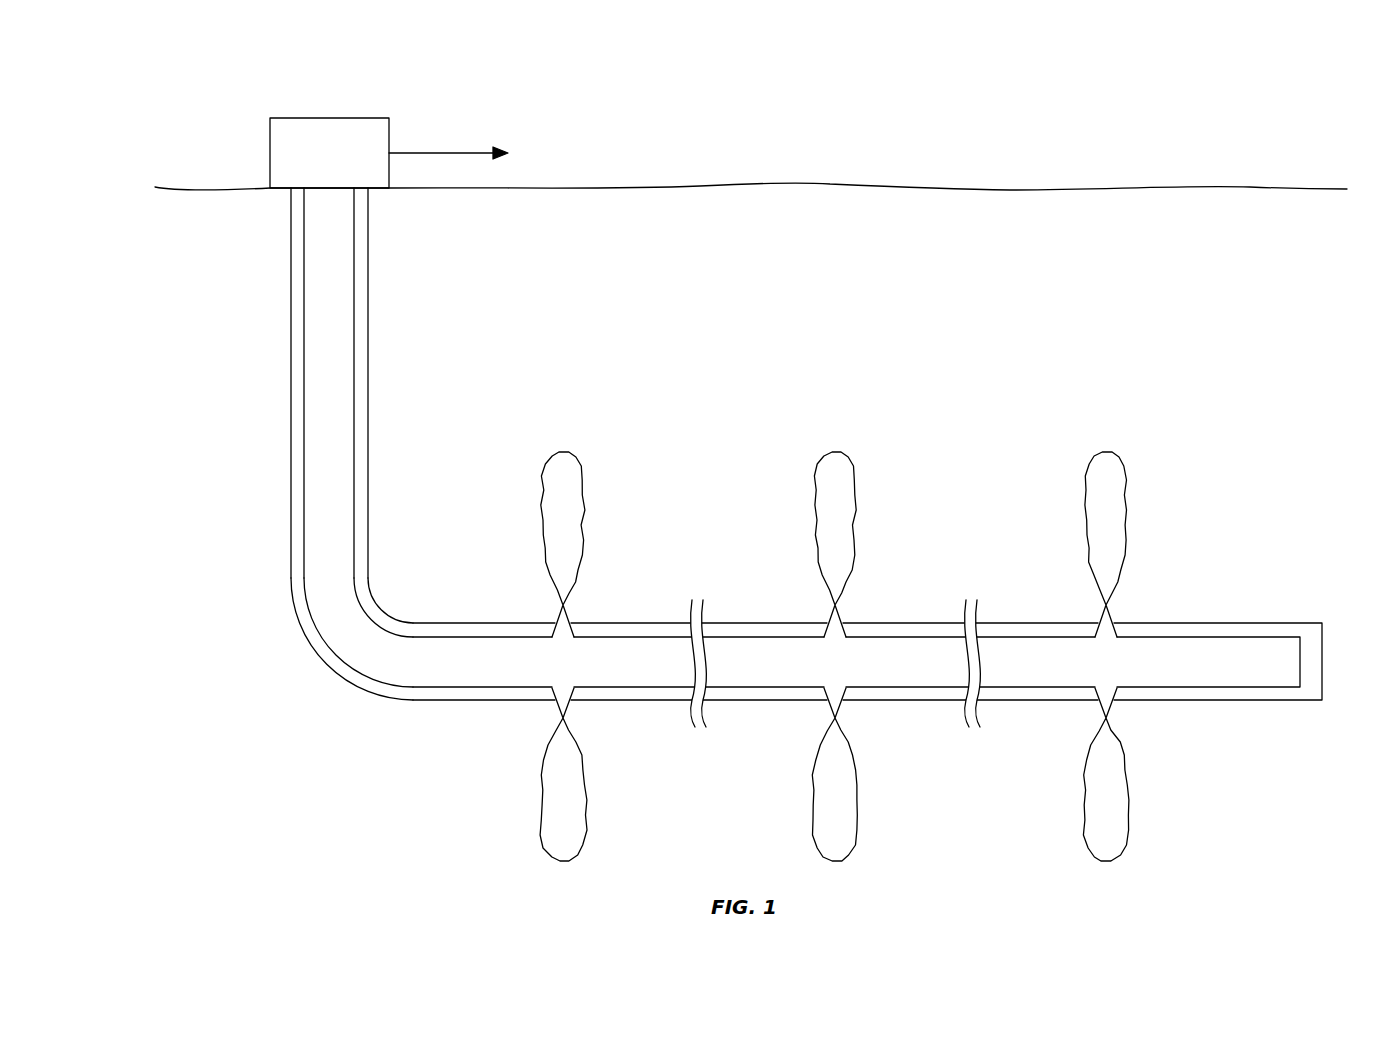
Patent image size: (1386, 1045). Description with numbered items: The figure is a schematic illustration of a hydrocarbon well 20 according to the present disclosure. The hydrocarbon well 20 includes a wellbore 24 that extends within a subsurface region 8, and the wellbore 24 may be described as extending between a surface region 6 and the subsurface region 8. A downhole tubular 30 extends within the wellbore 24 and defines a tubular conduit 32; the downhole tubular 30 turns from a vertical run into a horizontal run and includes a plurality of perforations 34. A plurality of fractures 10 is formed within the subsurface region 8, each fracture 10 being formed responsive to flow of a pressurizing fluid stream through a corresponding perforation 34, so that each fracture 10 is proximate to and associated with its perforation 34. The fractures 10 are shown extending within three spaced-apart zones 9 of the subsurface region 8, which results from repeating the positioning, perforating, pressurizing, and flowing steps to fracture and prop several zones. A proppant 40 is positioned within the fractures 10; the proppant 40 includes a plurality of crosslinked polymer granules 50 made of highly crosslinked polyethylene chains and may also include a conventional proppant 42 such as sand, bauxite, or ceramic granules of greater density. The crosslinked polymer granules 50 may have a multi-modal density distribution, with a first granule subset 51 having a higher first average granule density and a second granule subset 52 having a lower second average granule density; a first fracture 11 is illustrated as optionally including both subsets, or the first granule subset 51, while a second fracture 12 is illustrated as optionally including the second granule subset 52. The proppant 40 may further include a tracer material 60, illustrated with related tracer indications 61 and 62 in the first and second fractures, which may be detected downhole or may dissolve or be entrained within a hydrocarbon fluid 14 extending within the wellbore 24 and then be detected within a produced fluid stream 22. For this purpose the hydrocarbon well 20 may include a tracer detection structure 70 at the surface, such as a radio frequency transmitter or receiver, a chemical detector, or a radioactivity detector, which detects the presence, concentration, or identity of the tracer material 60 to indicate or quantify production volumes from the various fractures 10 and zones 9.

The surface region 6 is at (816, 132).
The subsurface region 8 is at (816, 276).
The spaced-apart zones 9 is at (612, 402).
The fractures 10 is at (532, 443).
The first fracture 11 is at (555, 470).
The second fracture 12 is at (827, 487).
The hydrocarbon fluid 14 is at (472, 150).
The hydrocarbon well 20 is at (198, 106).
The produced fluid stream 22 is at (434, 140).
The wellbore 24 is at (295, 257).
The downhole tubular 30 is at (287, 300).
The tubular conduit 32 is at (313, 343).
The perforations 34 is at (559, 622).
The proppant 40 is at (563, 441).
The conventional proppant 42 is at (575, 477).
The crosslinked polymer granules 50 is at (577, 508).
The first granule subset 51 is at (573, 533).
The second granule subset 52 is at (555, 497).
The tracer material 60 is at (547, 527).
The second fracture region 61 is at (557, 552).
The third fracture region 62 is at (827, 552).
The tracer detection structure 70 is at (322, 134).